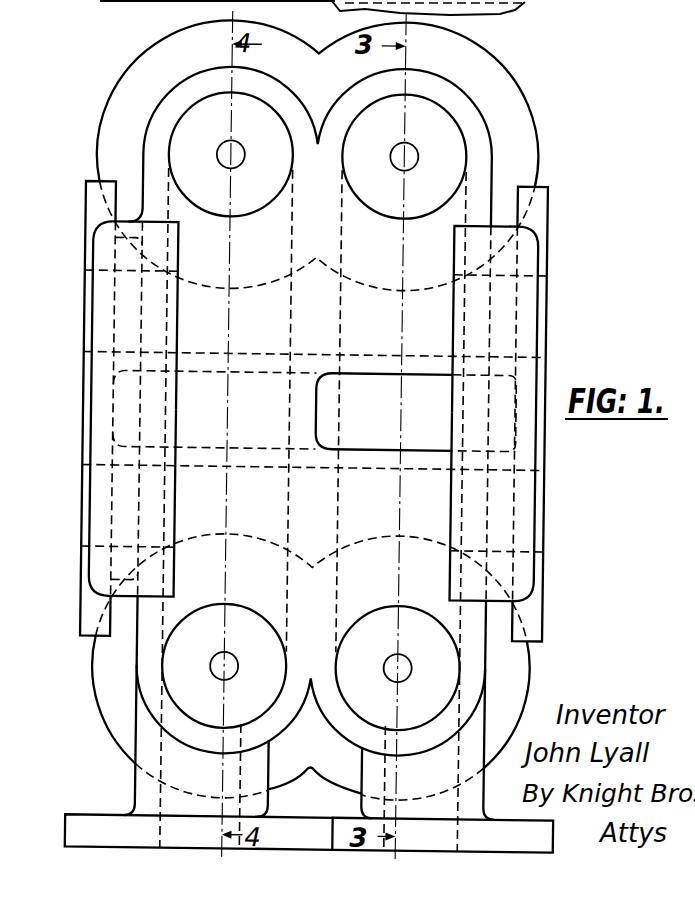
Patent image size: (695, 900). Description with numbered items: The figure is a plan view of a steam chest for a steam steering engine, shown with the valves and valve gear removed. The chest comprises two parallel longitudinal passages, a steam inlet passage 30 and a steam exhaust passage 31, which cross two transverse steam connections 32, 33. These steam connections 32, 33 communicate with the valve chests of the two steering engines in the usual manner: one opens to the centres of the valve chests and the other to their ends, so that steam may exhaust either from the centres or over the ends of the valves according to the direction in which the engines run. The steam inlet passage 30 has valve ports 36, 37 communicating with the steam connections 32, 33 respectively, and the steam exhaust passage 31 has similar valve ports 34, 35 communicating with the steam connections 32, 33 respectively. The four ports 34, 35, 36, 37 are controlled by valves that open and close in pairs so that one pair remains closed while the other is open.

The steam inlet passage 30 is at (426, 836).
The steam exhaust passage 31 is at (189, 837).
The transverse steam connection 32 is at (89, 313).
The transverse steam connection 33 is at (91, 526).
The valve port 34 is at (228, 667).
The valve port 35 is at (228, 156).
The valve port 36 is at (401, 156).
The valve port 37 is at (401, 667).